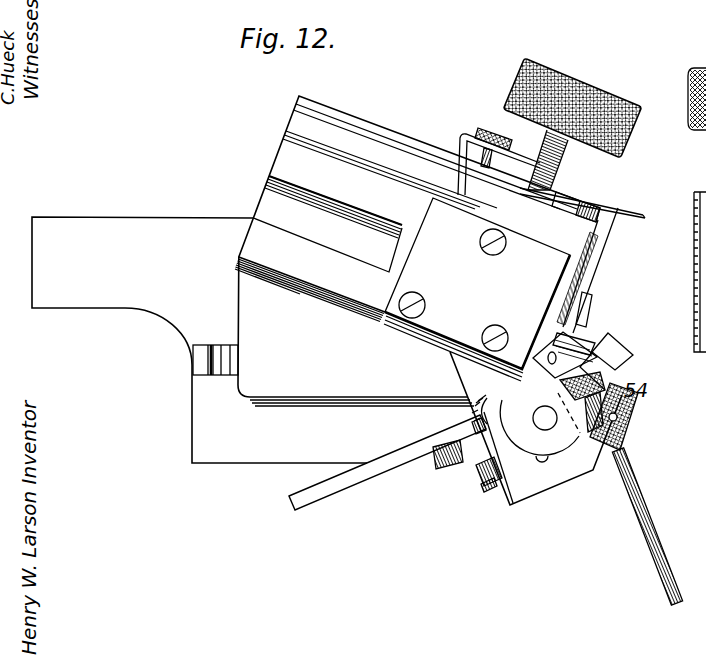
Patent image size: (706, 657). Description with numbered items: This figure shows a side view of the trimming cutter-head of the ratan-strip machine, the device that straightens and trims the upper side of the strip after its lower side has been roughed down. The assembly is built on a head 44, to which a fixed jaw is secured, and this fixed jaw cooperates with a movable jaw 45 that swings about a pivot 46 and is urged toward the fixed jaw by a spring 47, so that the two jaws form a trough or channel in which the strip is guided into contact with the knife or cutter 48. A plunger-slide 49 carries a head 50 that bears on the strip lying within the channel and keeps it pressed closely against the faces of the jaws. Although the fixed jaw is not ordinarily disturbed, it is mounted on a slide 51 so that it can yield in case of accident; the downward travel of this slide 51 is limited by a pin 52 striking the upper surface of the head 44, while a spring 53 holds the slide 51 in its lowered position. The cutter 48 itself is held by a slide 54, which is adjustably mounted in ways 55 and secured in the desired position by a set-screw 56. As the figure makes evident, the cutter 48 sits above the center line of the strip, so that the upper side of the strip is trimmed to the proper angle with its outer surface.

The head 44 is at (199, 340).
The movable jaw 45 is at (612, 368).
The pivot 46 is at (638, 424).
The spring 47 is at (500, 490).
The knife or cutter 48 is at (590, 335).
The plunger-slide 49 is at (236, 360).
The head 50 is at (538, 366).
The slide 51 is at (611, 223).
The pin 52 is at (562, 192).
The spring 53 is at (590, 194).
The slide 54 is at (398, 253).
The ways 55 is at (407, 251).
The set-screw 56 is at (589, 88).